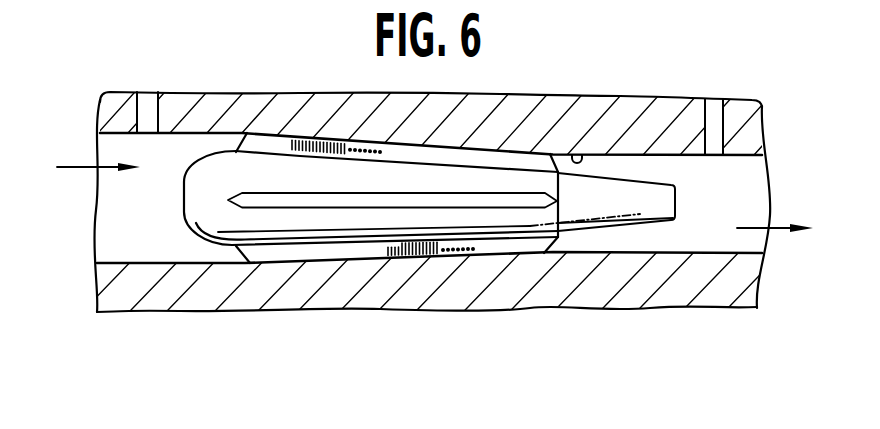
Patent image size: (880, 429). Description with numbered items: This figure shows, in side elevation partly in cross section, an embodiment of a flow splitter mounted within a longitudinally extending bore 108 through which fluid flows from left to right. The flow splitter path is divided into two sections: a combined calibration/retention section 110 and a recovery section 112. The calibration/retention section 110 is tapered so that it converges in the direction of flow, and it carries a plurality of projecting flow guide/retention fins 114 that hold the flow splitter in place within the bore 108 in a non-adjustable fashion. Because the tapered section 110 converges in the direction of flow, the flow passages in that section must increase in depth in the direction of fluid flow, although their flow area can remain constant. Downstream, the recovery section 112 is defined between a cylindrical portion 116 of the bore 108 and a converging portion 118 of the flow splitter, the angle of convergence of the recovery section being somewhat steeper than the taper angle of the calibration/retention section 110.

The longitudinally extending bore 108 is at (115, 239).
The combined calibration/retention section 110 is at (234, 288).
The recovery section 112 is at (674, 282).
The projecting flow guide/retention fins 114 is at (278, 146).
The cylindrical portion 116 is at (580, 153).
The converging portion 118 is at (637, 188).